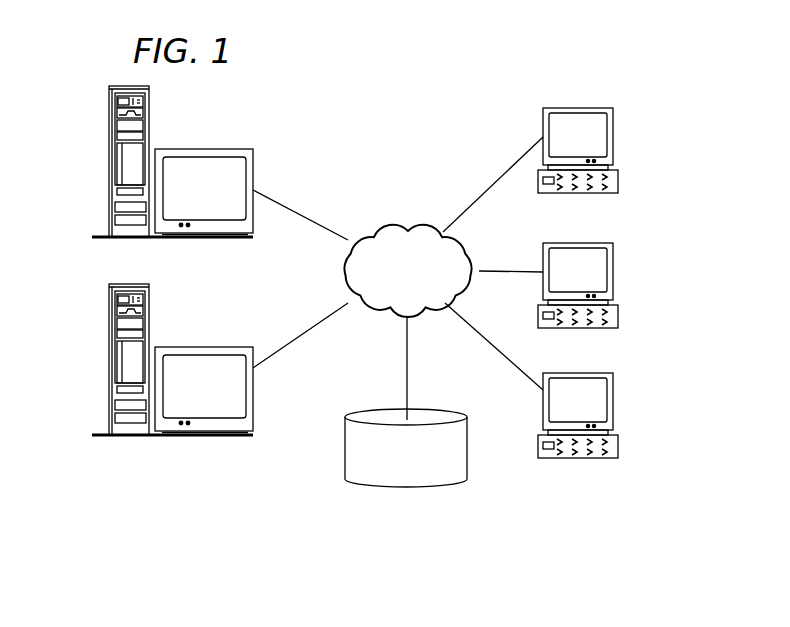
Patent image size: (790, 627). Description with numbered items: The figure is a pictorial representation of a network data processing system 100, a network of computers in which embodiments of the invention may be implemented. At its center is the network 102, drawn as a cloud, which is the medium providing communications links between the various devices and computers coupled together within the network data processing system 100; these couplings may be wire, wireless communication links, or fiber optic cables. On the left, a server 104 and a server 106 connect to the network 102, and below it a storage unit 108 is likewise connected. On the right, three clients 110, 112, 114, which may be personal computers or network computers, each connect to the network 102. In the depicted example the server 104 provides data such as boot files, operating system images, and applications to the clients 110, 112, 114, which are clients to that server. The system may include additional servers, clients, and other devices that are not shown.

The network data processing system 100 is at (460, 109).
The network 102 is at (380, 222).
The server 104 is at (110, 362).
The server 106 is at (109, 165).
The storage unit 108 is at (390, 488).
The client 110 is at (613, 137).
The client 112 is at (613, 272).
The client 114 is at (613, 400).